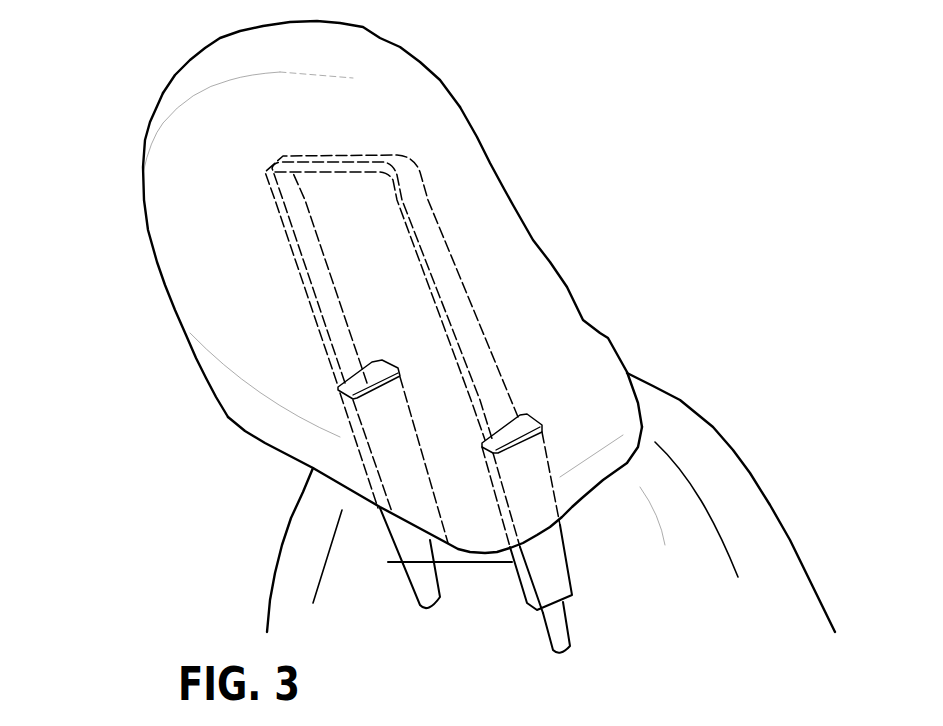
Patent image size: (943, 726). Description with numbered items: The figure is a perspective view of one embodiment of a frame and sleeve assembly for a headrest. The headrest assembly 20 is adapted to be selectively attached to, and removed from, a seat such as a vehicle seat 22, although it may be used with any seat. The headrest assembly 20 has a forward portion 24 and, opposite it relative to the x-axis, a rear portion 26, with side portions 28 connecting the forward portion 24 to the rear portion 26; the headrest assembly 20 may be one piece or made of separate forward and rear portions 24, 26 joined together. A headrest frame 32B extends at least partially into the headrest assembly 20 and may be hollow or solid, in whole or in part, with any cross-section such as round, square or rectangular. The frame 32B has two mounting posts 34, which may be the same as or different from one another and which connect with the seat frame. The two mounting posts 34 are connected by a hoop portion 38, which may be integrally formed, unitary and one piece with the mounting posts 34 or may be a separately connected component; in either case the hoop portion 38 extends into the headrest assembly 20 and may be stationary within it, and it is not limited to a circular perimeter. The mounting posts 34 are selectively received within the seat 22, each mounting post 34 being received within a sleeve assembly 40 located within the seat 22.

The headrest assembly 20 is at (522, 76).
The vehicle seat 22 is at (715, 445).
The forward portion 24 is at (127, 253).
The rear portion 26 is at (548, 233).
The side portion 28 is at (488, 175).
The headrest frame 32B is at (468, 298).
The mounting post 34 is at (330, 338).
The hoop portion 38 is at (281, 208).
The sleeve assembly 40 is at (393, 562).